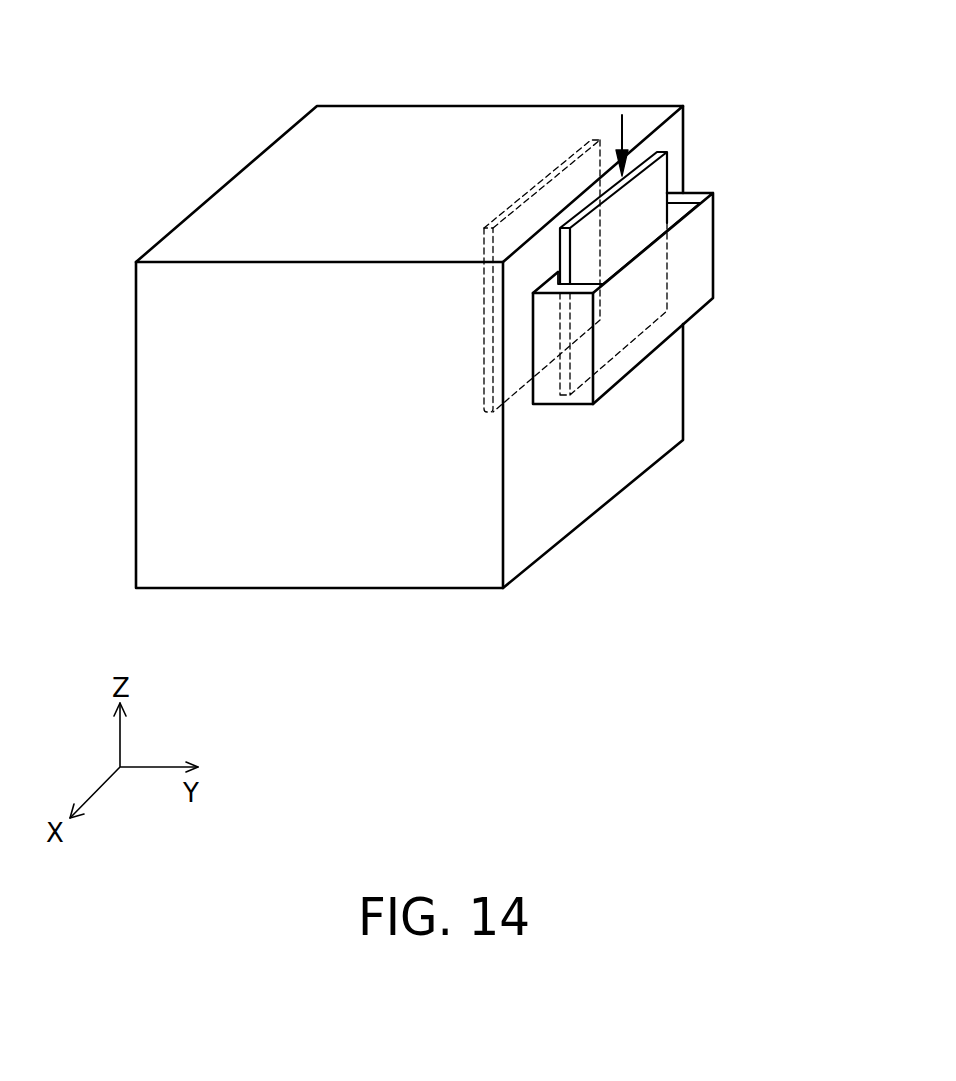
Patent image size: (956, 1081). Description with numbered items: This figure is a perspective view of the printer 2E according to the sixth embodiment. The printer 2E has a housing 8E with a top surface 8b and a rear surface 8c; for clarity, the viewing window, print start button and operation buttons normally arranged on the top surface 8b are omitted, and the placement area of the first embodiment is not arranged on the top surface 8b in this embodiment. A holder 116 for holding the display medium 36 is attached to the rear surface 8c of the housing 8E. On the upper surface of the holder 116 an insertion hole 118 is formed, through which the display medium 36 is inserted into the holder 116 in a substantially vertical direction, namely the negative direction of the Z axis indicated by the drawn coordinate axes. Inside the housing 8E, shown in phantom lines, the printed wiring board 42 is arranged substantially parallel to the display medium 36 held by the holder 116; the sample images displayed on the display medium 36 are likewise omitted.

The printer 2E is at (462, 303).
The top surface 8b is at (353, 122).
The rear surface 8c is at (593, 490).
The housing 8E is at (685, 370).
The printed wiring board 42 is at (555, 167).
The display medium 36 is at (658, 182).
The holder 116 is at (678, 298).
The insertion hole 118 is at (648, 224).